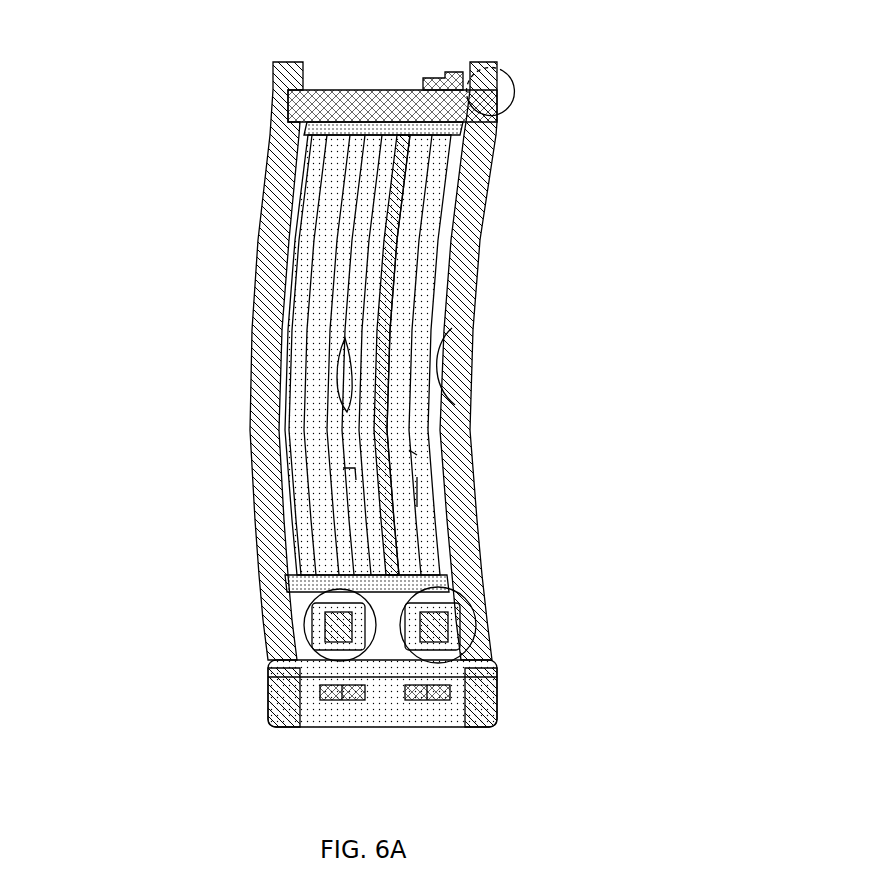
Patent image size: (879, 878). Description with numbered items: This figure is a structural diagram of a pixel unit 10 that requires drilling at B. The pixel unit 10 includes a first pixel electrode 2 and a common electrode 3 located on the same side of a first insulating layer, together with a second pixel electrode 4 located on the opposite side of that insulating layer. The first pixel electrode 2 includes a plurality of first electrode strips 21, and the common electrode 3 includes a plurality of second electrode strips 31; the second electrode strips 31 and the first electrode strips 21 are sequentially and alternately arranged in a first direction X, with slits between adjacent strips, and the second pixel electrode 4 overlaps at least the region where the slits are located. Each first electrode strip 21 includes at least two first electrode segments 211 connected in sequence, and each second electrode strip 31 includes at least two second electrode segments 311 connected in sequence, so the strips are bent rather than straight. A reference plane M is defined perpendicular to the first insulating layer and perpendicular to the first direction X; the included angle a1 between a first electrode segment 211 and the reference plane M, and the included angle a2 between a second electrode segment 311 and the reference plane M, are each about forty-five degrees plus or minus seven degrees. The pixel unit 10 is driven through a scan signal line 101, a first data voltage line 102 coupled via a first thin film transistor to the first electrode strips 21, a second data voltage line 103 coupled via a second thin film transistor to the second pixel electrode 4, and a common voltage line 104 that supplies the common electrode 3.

The pixel unit 10 is at (100, 61).
The scan signal line 101 is at (382, 735).
The first data voltage line 102 is at (268, 497).
The second data voltage line 103 is at (478, 168).
The common voltage line 104 is at (370, 83).
The first pixel electrode 2 is at (254, 355).
The first electrode strips 21 is at (267, 355).
The first electrode segments 211 is at (335, 300).
The common electrode 3 is at (520, 355).
The second electrode strips 31 is at (504, 355).
The second electrode segments 311 is at (433, 268).
The second pixel electrode 4 is at (447, 575).
The region A is at (283, 613).
The drilling position B is at (485, 638).
The region C is at (508, 78).
The reference plane M is at (378, 538).
The included angle a1 is at (353, 473).
The included angle a2 is at (410, 450).
The first direction X is at (63, 157).